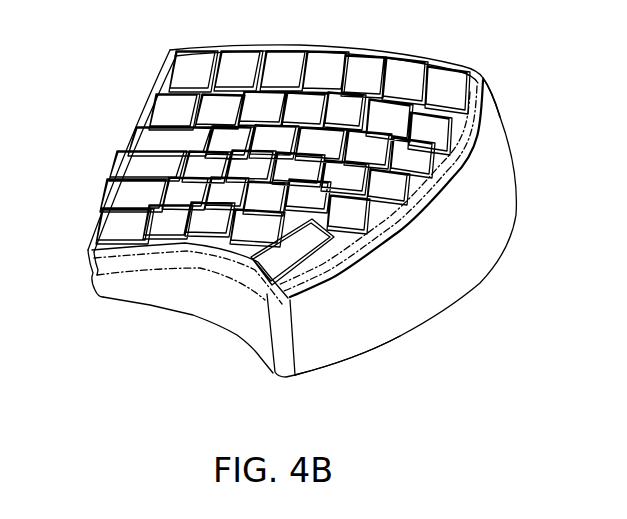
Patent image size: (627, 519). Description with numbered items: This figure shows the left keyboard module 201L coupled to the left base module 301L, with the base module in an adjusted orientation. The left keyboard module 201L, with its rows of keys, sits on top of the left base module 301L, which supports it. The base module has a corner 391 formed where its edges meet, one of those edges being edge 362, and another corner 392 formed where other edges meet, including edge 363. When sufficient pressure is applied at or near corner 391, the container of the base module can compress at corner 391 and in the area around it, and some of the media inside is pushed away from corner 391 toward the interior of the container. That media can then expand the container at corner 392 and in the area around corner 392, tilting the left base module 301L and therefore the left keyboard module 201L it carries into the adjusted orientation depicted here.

The left keyboard module 201L is at (465, 64).
The left base module 301L is at (443, 313).
The corner 392 is at (500, 117).
The corner 391 is at (98, 283).
The edge 362 is at (187, 317).
The edge 363 is at (355, 357).